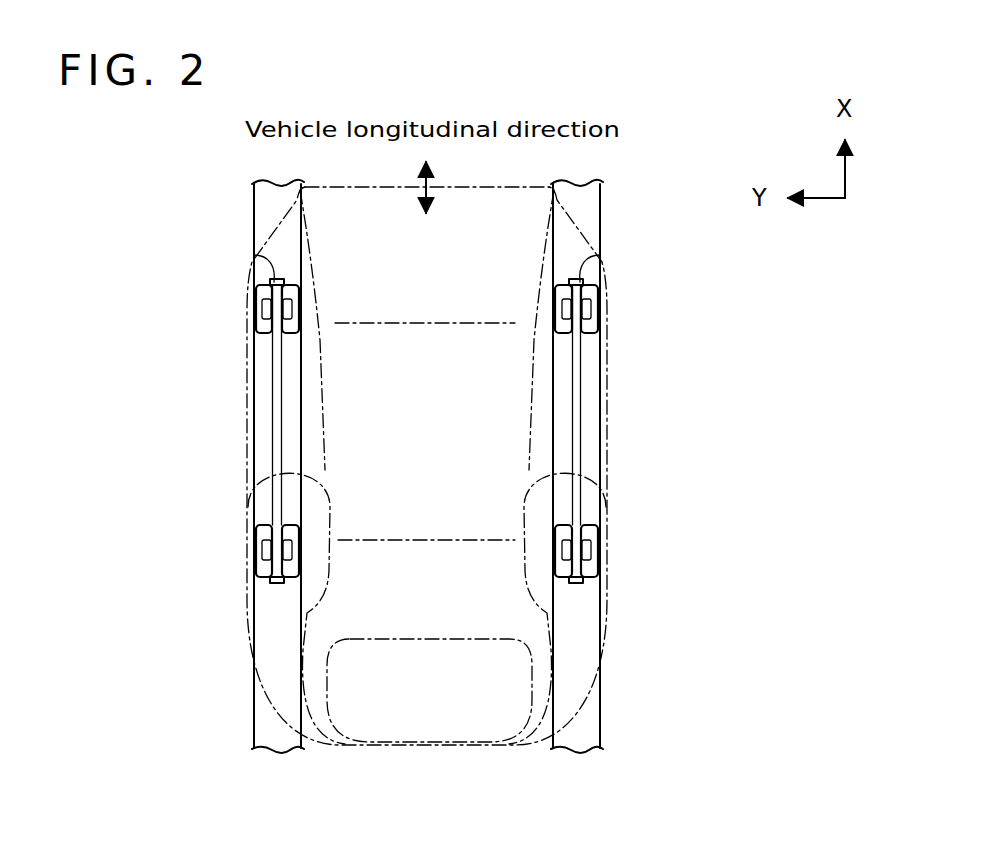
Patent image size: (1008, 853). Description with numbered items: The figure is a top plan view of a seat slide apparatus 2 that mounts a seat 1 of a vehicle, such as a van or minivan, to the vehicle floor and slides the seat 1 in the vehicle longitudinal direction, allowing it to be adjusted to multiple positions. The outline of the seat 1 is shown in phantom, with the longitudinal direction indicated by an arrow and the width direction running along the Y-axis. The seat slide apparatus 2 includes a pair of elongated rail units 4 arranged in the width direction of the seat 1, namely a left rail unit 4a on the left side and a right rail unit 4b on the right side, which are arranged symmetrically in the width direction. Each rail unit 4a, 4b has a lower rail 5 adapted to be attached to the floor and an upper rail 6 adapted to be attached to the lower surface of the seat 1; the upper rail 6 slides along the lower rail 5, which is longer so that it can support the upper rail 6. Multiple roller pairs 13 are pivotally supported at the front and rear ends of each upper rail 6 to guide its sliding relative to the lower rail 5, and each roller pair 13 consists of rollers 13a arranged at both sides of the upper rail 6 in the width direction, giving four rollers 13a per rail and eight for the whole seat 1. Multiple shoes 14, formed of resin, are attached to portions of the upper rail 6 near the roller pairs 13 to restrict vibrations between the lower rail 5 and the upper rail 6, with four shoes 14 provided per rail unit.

The seat 1 is at (470, 186).
The seat slide apparatus 2 is at (642, 159).
The rail units 4 is at (426, 466).
The left rail unit 4a is at (203, 466).
The right rail unit 4b is at (600, 217).
The lower rail 5 is at (254, 217).
The upper rail 6 is at (199, 210).
The roller pairs 13 is at (431, 432).
The rollers 13a is at (258, 303).
The shoes 14 is at (284, 281).